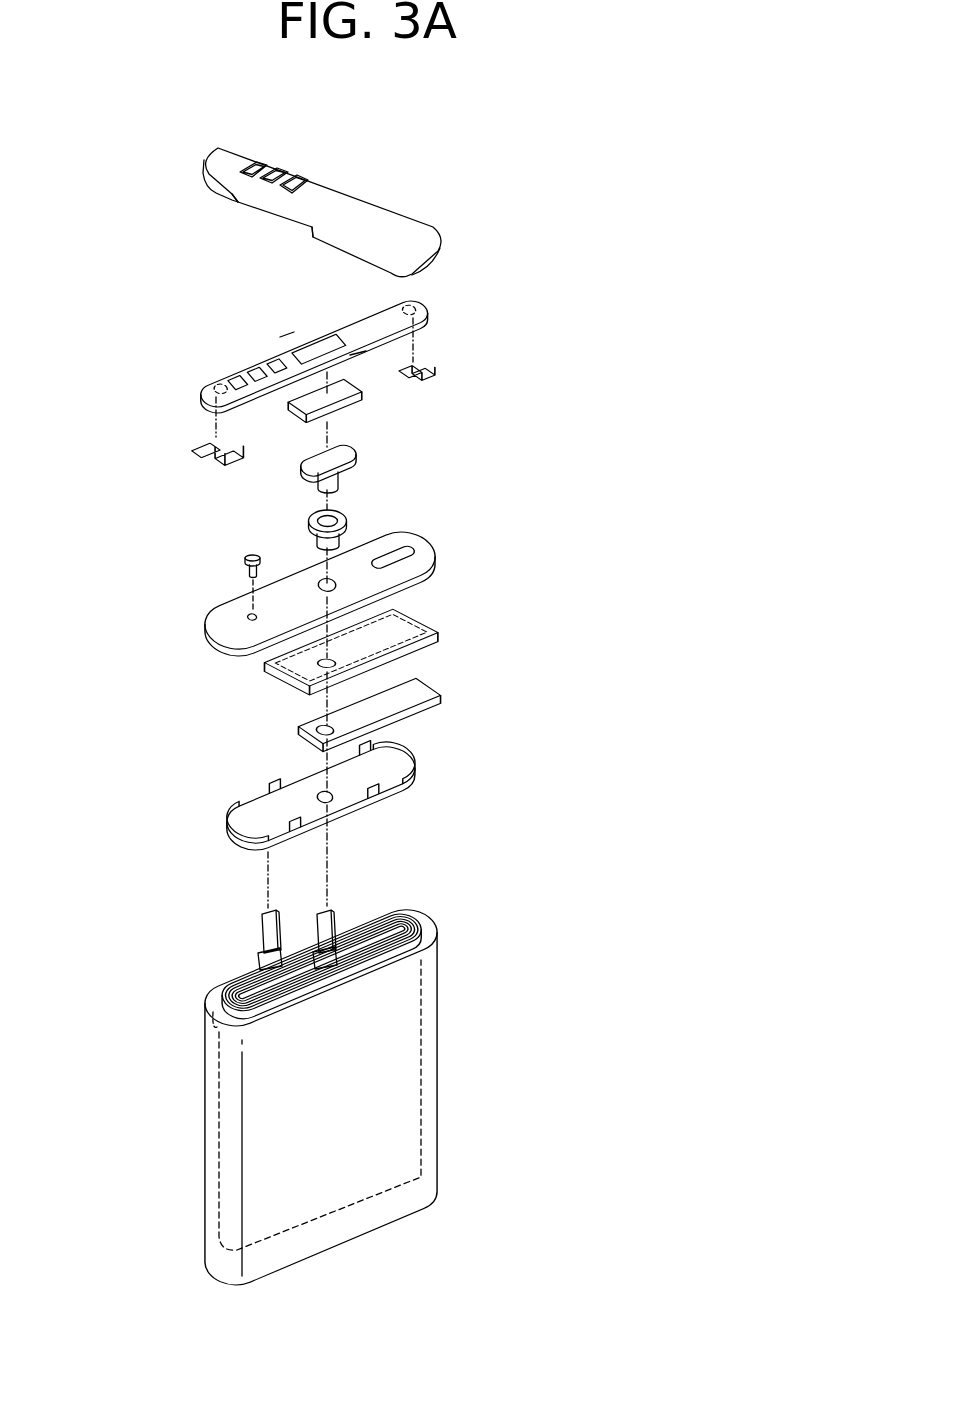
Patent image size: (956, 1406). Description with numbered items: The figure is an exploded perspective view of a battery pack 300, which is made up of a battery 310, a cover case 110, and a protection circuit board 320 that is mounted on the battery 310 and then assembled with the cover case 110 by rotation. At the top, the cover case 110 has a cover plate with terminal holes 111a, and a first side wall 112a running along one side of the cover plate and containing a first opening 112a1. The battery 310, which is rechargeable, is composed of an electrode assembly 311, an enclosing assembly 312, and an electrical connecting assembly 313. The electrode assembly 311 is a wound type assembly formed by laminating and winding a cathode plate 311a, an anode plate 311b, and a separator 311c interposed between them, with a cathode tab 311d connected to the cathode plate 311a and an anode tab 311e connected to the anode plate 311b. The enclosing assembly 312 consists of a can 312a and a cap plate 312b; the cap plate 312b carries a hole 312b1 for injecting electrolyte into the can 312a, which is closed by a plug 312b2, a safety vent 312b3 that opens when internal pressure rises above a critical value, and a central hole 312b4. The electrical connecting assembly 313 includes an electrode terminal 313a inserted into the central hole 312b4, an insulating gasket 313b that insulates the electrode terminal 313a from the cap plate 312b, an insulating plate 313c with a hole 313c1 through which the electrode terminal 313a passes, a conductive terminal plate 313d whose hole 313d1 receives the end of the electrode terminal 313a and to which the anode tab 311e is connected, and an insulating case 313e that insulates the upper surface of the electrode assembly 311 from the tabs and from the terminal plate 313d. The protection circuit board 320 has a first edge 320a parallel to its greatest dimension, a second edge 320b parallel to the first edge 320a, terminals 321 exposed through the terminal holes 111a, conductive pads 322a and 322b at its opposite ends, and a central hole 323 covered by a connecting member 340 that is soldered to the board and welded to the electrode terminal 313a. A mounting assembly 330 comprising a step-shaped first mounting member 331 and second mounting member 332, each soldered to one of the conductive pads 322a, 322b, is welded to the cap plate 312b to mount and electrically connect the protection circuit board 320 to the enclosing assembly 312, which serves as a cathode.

The battery pack 300 is at (609, 223).
The cover case 110 is at (402, 208).
The terminal holes 111a is at (295, 182).
The first side wall 112a is at (358, 245).
The first opening 112a1 is at (265, 211).
The battery 310 is at (605, 1007).
The electrode assembly 311 is at (611, 868).
The cathode plate 311a is at (321, 966).
The anode plate 311b is at (417, 921).
The separator 311c is at (321, 962).
The cathode tab 311d is at (273, 921).
The anode tab 311e is at (325, 918).
The enclosing assembly 312 is at (611, 1007).
The can 312a is at (213, 1055).
The cap plate 312b is at (227, 623).
The hole 312b1 is at (252, 617).
The plug 312b2 is at (252, 553).
The safety vent 312b3 is at (393, 557).
The central hole 312b4 is at (327, 584).
The electrical connecting assembly 313 is at (549, 460).
The electrode terminal 313a is at (332, 446).
The insulating gasket 313b is at (343, 506).
The insulating plate 313c is at (410, 603).
The hole 313c1 is at (305, 667).
The terminal plate 313d is at (413, 683).
The hole 313d1 is at (320, 731).
The insulating case 313e is at (407, 741).
The protection circuit board 320 is at (198, 370).
The first edge 320a is at (358, 353).
The second edge 320b is at (287, 342).
The terminals 321 is at (257, 374).
The conductive pad 322a is at (221, 388).
The conductive pad 322b is at (409, 309).
The central hole 323 is at (319, 349).
The mounting assembly 330 is at (495, 365).
The first mounting member 331 is at (228, 438).
The second mounting member 332 is at (433, 368).
The connecting member 340 is at (295, 396).